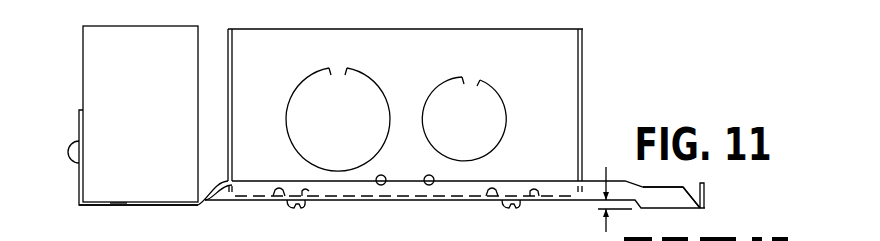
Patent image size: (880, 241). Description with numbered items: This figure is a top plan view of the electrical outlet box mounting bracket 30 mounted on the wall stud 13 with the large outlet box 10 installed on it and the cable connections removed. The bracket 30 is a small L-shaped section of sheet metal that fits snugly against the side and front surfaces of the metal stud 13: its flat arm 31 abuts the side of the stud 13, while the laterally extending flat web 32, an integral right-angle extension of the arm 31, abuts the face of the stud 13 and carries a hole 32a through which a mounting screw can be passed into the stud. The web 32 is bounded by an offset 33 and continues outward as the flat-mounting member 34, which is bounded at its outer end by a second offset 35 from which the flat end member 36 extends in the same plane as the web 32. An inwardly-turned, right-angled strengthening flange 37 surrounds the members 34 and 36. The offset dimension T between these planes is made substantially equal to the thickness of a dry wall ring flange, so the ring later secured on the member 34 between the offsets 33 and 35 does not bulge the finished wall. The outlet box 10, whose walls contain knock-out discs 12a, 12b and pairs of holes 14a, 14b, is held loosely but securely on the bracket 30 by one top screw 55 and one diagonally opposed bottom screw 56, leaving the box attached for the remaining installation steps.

The electrical outlet box 10 is at (583, 92).
The knock-out disc 12a is at (314, 90).
The knock-out disc 12b is at (492, 106).
The wall stud 13 is at (93, 63).
The hole 14a is at (383, 175).
The hole 14b is at (435, 179).
The electrical outlet box mounting bracket 30 is at (448, 200).
The flat arm 31 is at (79, 113).
The laterally extending flat web 32 is at (111, 205).
The hole 32a is at (128, 203).
The offset 33 is at (205, 203).
The flat-mounting member 34 is at (388, 196).
The offset 35 is at (643, 203).
The flat end member 36 is at (683, 208).
The strengthening flange 37 is at (708, 193).
The top screw 55 is at (518, 208).
The bottom screw 56 is at (305, 208).
The offset dimension T is at (605, 226).